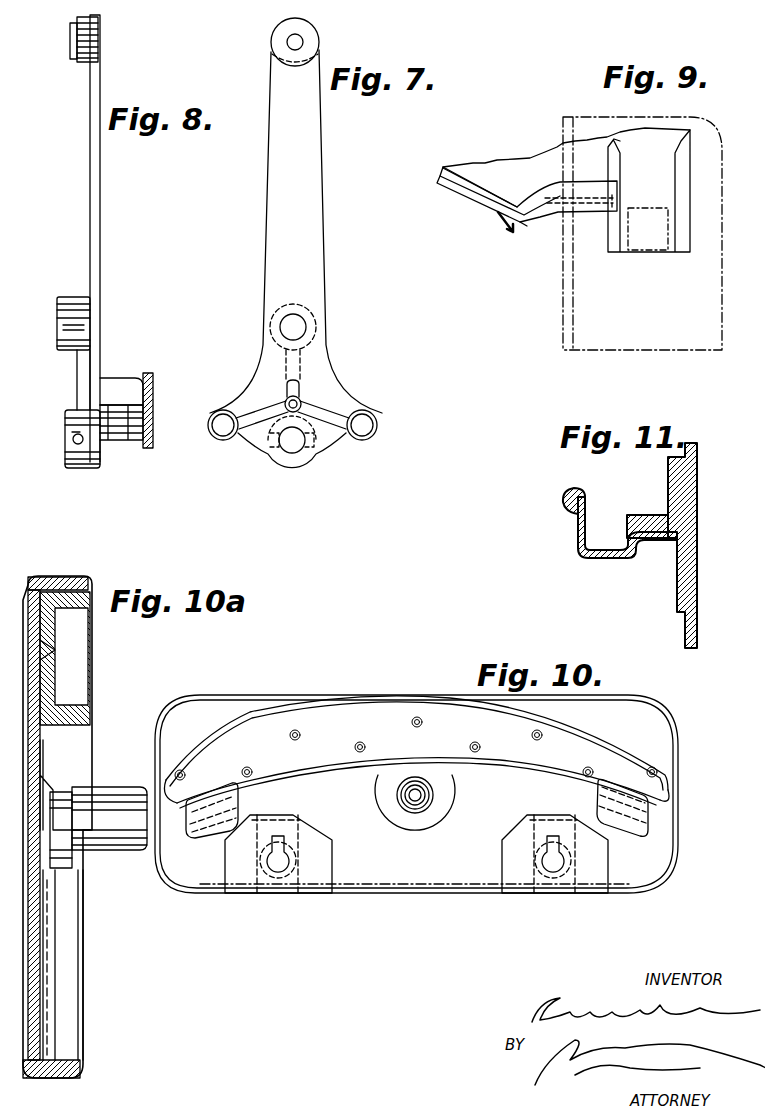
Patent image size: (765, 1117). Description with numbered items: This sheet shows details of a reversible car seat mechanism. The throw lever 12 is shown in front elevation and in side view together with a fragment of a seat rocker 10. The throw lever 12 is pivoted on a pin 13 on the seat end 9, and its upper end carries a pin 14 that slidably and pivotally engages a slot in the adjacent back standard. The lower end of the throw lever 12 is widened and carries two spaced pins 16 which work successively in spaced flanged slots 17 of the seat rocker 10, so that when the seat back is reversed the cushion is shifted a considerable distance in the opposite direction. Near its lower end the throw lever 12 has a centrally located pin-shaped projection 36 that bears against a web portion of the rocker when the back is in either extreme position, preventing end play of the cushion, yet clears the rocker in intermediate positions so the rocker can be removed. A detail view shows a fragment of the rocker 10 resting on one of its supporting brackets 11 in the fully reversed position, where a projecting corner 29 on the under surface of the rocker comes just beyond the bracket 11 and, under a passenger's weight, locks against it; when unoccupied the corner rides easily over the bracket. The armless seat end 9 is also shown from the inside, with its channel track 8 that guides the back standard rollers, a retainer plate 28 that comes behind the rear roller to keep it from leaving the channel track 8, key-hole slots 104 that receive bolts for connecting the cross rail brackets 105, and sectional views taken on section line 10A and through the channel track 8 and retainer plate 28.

In FIG. 11, the channel track 8 is at (634, 515).
In FIG. 10A, the channel track 8 is at (53, 672).
In FIG. 10, the channel track 8 is at (336, 732).
In FIG. 11, the seat end 9 is at (692, 620).
In FIG. 10A, the seat end 9 is at (40, 779).
In FIG. 10, the seat end 9 is at (653, 721).
In FIG. 8, the seat rocker 10 is at (153, 441).
In FIG. 9, the seat rocker 10 is at (502, 185).
In FIG. 10, the section line 10A is at (426, 919).
In FIG. 9, the bracket 11 is at (565, 315).
In FIG. 10, the bracket 11 is at (612, 820).
In FIG. 8, the throw lever 12 is at (98, 196).
In FIG. 7, the throw lever 12 is at (312, 192).
In FIG. 8, the pin 13 is at (68, 302).
In FIG. 10A, the pin 13 is at (125, 848).
In FIG. 10, the pin 13 is at (410, 798).
In FIG. 8, the pin 14 is at (72, 44).
In FIG. 8, the pins 16 is at (130, 436).
In FIG. 7, the pins 16 is at (225, 429).
In FIG. 9, the flanged slots 17 is at (676, 168).
In FIG. 11, the retainer plate 28 is at (580, 543).
In FIG. 10, the retainer plate 28 is at (653, 793).
In FIG. 9, the projecting corner 29 is at (528, 230).
In FIG. 8, the projection 36 is at (122, 385).
In FIG. 7, the projection 36 is at (300, 405).
In FIG. 10, the key-hole slots 104 is at (550, 878).
In FIG. 10, the cross rail brackets 105 is at (543, 833).